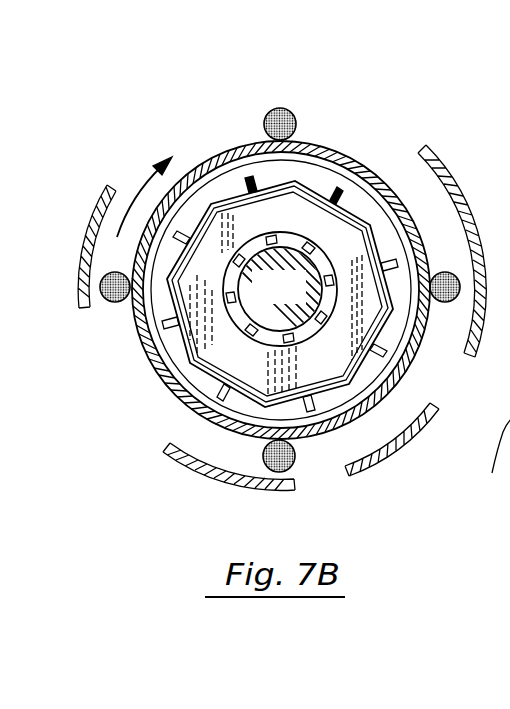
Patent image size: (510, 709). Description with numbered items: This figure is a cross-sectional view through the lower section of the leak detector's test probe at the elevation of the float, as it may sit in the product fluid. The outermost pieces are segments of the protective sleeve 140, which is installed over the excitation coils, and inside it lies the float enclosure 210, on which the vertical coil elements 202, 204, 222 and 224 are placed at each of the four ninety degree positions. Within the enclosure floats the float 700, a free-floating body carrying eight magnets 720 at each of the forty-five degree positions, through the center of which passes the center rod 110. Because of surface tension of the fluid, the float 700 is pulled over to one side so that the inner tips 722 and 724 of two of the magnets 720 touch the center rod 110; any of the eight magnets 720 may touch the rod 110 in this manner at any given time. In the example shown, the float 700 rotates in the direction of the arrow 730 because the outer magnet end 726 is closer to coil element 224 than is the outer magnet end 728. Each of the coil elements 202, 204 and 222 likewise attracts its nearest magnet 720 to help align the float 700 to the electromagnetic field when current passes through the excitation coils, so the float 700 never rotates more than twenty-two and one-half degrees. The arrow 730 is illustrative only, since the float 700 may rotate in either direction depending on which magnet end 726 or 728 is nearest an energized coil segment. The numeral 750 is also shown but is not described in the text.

The center rod 110 is at (302, 300).
The protective sleeve 140 is at (473, 215).
The vertical coil element 202 is at (103, 303).
The vertical coil element 204 is at (445, 303).
The float enclosure 210 is at (193, 162).
The vertical coil element 222 is at (297, 463).
The vertical coil element 224 is at (287, 108).
The float 700 is at (298, 228).
The magnets 720 is at (281, 227).
The inner tip of magnet 722 is at (233, 243).
The inner tip of magnet 724 is at (350, 185).
The outer magnet end 726 is at (247, 175).
The outer magnet end 728 is at (323, 260).
The directional arrow 730 is at (143, 190).
The connector line 750 is at (491, 463).